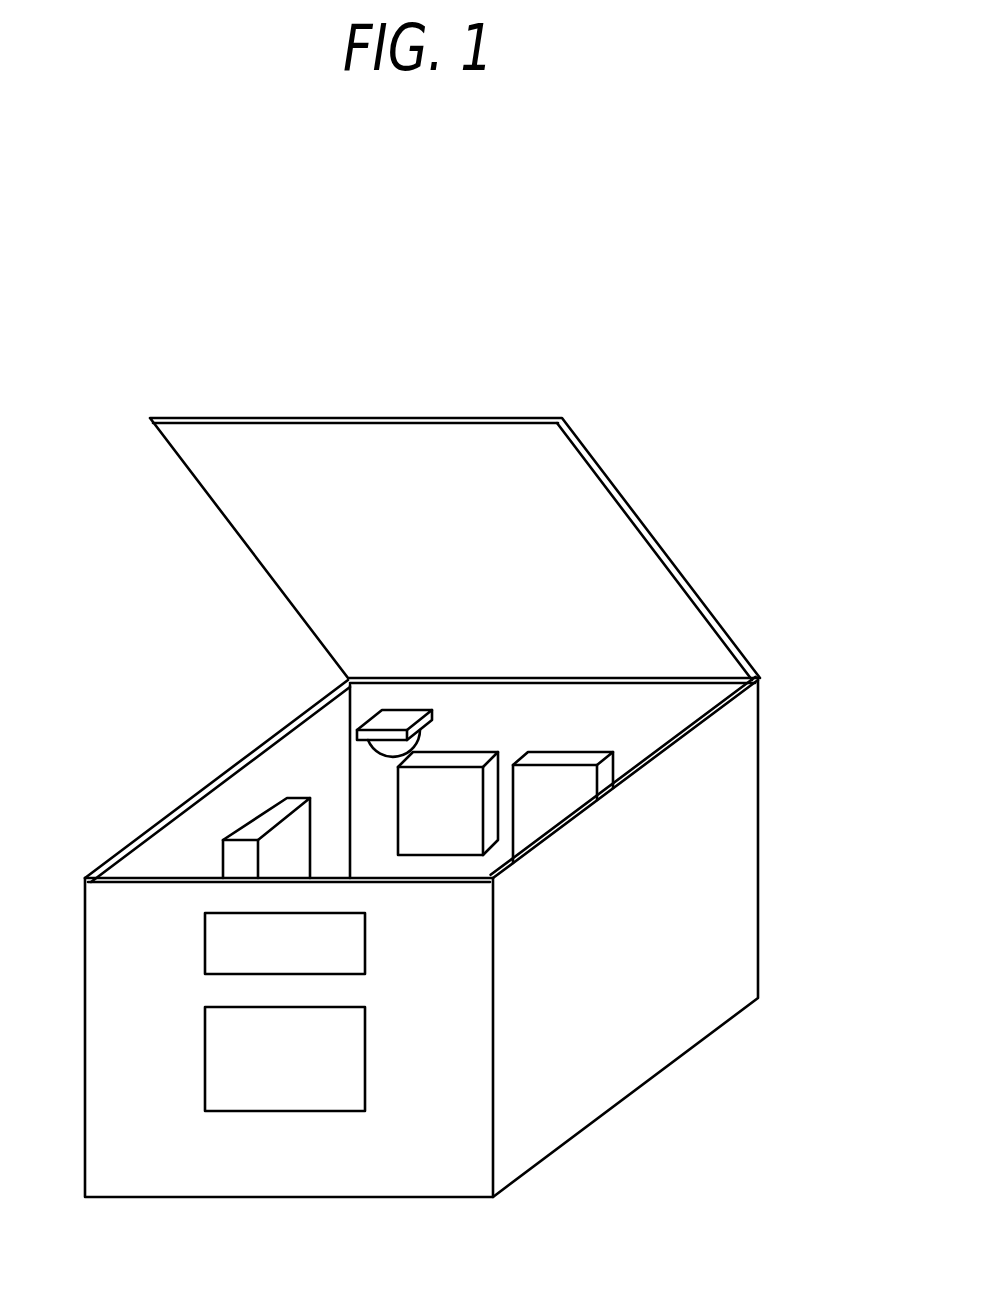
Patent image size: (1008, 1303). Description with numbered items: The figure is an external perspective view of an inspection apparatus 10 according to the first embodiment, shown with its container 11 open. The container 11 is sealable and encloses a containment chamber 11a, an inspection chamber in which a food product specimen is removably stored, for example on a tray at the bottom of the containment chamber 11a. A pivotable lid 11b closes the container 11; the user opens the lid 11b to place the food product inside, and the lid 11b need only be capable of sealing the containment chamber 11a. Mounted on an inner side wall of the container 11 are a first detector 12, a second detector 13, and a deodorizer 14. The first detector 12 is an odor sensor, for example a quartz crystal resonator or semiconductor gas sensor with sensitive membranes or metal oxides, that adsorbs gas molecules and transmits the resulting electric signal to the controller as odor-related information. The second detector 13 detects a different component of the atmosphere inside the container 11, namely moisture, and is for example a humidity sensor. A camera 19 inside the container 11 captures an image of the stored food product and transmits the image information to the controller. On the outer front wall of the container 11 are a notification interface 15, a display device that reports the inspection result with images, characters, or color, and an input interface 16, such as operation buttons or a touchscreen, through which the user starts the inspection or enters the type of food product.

The inspection apparatus 10 is at (763, 440).
The container 11 is at (330, 710).
The containment chamber 11a is at (390, 749).
The lid 11b is at (397, 440).
The first detector 12 is at (592, 755).
The second detector 13 is at (450, 817).
The deodorizer 14 is at (263, 818).
The notification interface 15 is at (282, 1060).
The input interface 16 is at (219, 949).
The camera 19 is at (373, 817).